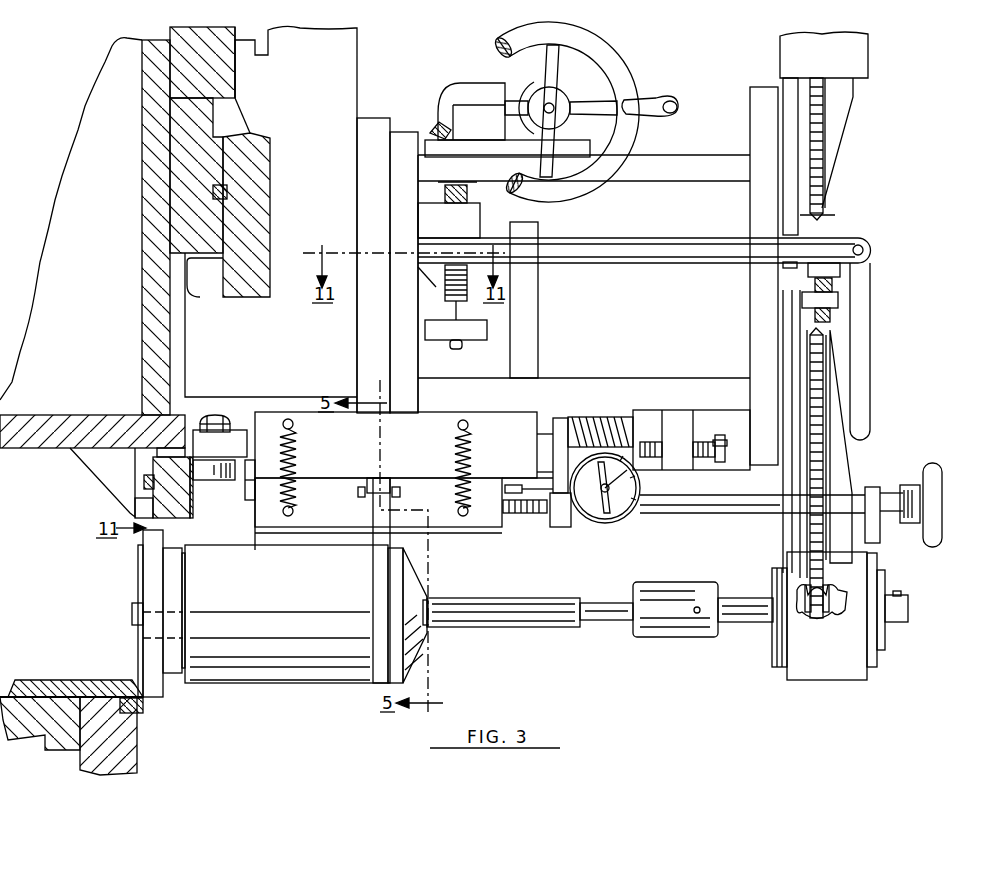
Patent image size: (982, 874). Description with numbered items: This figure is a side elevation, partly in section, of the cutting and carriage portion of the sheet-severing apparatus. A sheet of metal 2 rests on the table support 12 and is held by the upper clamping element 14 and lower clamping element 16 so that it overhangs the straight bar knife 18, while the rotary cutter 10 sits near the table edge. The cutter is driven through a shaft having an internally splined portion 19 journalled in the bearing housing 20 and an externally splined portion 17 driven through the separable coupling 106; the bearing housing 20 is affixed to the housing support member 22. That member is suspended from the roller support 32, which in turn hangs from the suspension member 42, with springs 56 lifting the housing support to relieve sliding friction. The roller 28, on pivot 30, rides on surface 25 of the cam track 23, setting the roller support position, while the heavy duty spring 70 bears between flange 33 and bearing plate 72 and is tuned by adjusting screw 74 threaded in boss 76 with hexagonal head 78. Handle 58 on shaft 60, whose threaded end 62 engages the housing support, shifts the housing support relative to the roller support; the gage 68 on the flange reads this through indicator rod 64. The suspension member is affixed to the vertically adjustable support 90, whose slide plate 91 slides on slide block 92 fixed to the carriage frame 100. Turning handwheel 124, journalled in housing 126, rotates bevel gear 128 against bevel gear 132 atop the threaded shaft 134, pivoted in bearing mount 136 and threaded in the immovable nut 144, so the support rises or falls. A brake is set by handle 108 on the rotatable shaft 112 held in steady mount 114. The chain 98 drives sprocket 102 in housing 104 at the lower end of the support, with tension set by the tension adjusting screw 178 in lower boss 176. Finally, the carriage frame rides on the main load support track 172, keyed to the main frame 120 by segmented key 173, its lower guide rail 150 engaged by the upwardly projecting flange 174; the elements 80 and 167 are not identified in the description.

The sheet of metal 2 is at (70, 695).
The rotary cutter 10 is at (163, 675).
The table support 12 is at (33, 742).
The upper clamping element 14 is at (108, 680).
The lower clamping element 16 is at (127, 742).
The externally splined portion 17 is at (592, 621).
The straight bar knife 18 is at (143, 708).
The internally splined portion 19 is at (470, 628).
The bearing housing 20 is at (284, 684).
The housing support member 22 is at (455, 528).
The cam track 23 is at (163, 517).
The surface of cam track 25 is at (188, 497).
The roller 28 is at (218, 482).
The pivot 30 is at (215, 418).
The roller support 32 is at (243, 430).
The flange 33 is at (560, 528).
The suspension member 42 is at (303, 410).
The spring 56 is at (298, 446).
The handle (handwheel) 58 is at (942, 497).
The shaft 60 is at (660, 514).
The threaded end 62 is at (520, 514).
The indicator rod 64 is at (514, 485).
The gage 68 is at (613, 522).
The heavy duty spring 70 is at (590, 417).
The bearing plate 72 is at (640, 410).
The adjusting screw 74 is at (702, 466).
The boss 76 is at (670, 470).
The hexagonal head 78 is at (723, 438).
The motor mounting plate 80 is at (378, 595).
The vertically adjustable support 90 is at (678, 156).
The slide plate 91 is at (400, 135).
The slide block 92 is at (366, 123).
The chain 98 is at (835, 470).
The carriage frame 100 is at (338, 74).
The sprocket 102 is at (828, 618).
The housing 104 is at (878, 657).
The separable coupling 106 is at (655, 638).
The handle 108 is at (873, 388).
The rotatable shaft 112 is at (702, 264).
The steady mount 114 is at (538, 292).
The main frame 120 is at (152, 140).
The handwheel 124 is at (617, 50).
The housing 126 is at (487, 83).
The bevel gear 128 is at (440, 122).
The bevel gear 132 is at (443, 141).
The threaded shaft 134 is at (465, 192).
The bearing mount 136 is at (475, 340).
The nut 144 is at (470, 221).
The lower guide rail 150 is at (248, 300).
The wall section 167 is at (250, 130).
The main load support track 172 is at (272, 162).
The segmented key 173 is at (228, 190).
The upwardly projecting flange 174 is at (200, 277).
The lower boss 176 is at (840, 302).
The tension adjusting screw 178 is at (842, 270).